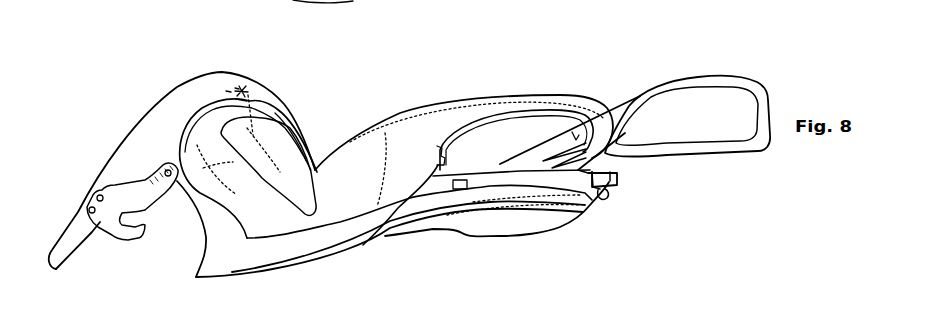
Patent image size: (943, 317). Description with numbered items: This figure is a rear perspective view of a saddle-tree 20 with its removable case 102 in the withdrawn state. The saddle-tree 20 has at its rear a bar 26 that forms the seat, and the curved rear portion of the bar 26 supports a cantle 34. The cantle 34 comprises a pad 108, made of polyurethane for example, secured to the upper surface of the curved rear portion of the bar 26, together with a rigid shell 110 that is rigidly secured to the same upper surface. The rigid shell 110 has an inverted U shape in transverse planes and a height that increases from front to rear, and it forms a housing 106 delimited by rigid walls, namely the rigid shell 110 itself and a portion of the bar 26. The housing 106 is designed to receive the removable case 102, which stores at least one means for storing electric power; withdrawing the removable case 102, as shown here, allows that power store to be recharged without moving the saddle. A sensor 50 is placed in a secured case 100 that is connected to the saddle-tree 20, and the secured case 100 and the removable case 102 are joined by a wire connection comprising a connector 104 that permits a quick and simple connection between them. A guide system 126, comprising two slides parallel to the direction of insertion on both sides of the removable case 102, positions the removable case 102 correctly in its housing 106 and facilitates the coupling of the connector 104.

The saddle-tree 20 is at (318, 94).
The bar 26 is at (352, 230).
The cantle 34 is at (442, 100).
The sensor 50 is at (239, 85).
The secured case 100 is at (228, 92).
The removable case 102 is at (719, 65).
The connector 104 is at (471, 184).
The housing 106 is at (519, 135).
The pad 108 is at (385, 133).
The rigid shell 110 is at (553, 220).
The guide system 126 is at (436, 145).